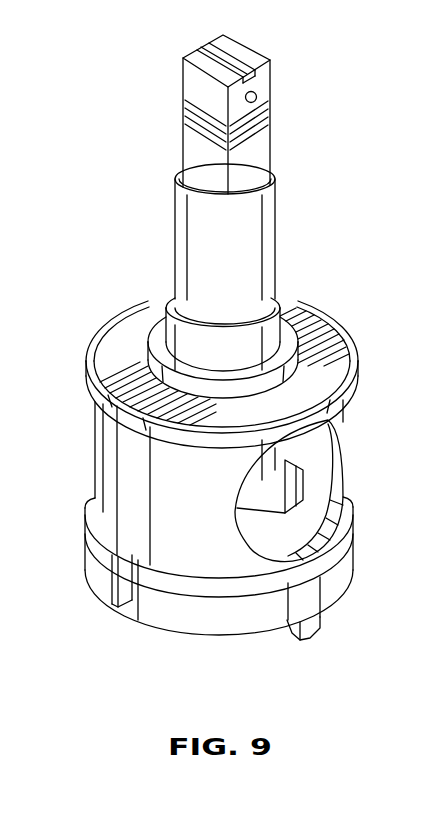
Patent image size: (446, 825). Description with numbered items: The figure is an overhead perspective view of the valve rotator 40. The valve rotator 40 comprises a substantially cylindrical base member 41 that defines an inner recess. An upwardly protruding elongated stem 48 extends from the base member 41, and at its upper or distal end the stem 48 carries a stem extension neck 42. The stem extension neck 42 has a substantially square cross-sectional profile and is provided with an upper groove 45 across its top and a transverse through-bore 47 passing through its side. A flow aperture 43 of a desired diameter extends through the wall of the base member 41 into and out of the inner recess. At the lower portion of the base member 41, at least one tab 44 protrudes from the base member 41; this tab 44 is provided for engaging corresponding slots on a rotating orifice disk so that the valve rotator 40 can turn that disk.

The valve rotator 40 is at (320, 291).
The base member 41 is at (110, 466).
The stem extension neck 42 is at (188, 118).
The flow aperture 43 is at (332, 468).
The tab 44 is at (320, 630).
The upper groove 45 is at (228, 60).
The transverse through-bore 47 is at (257, 101).
The elongated stem 48 is at (190, 232).